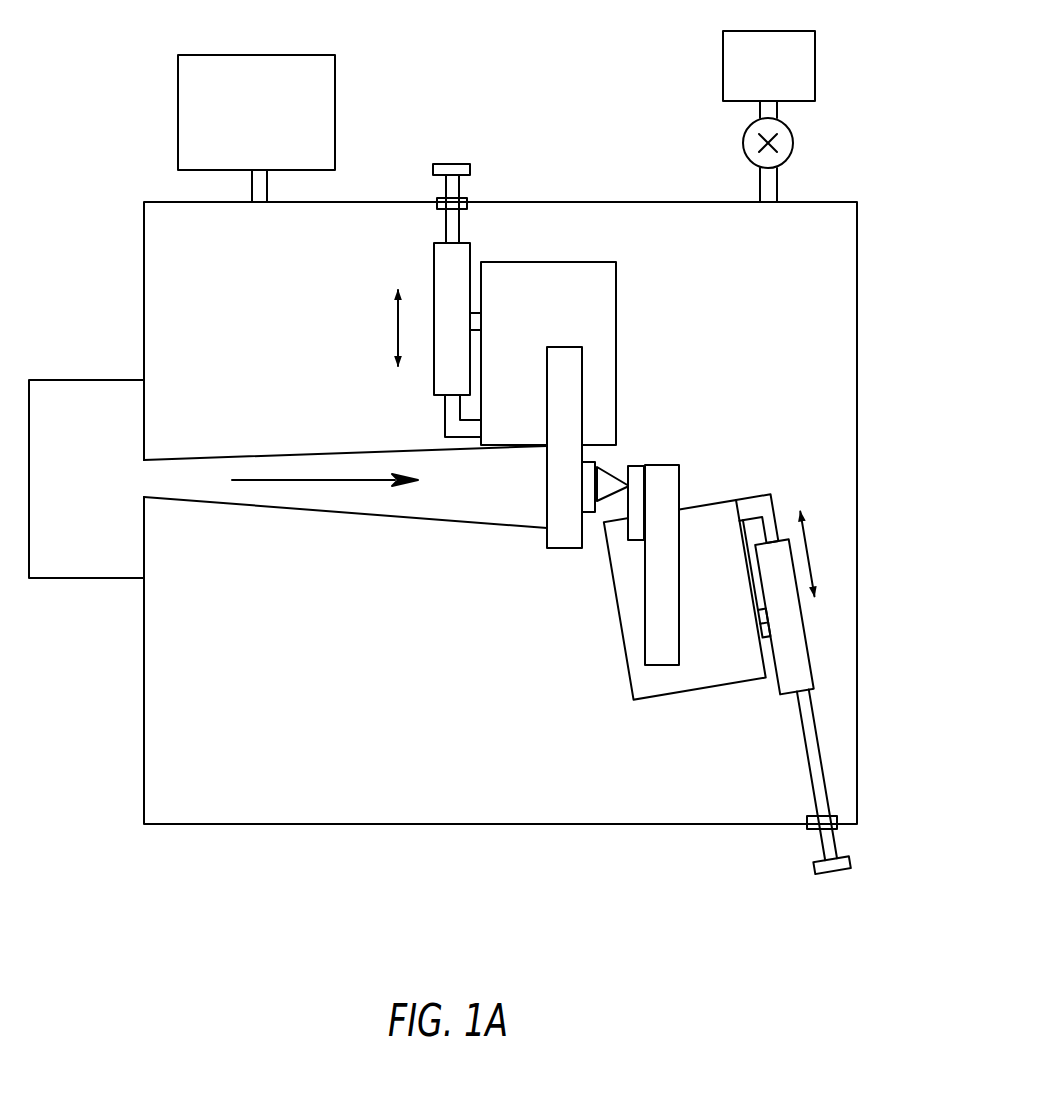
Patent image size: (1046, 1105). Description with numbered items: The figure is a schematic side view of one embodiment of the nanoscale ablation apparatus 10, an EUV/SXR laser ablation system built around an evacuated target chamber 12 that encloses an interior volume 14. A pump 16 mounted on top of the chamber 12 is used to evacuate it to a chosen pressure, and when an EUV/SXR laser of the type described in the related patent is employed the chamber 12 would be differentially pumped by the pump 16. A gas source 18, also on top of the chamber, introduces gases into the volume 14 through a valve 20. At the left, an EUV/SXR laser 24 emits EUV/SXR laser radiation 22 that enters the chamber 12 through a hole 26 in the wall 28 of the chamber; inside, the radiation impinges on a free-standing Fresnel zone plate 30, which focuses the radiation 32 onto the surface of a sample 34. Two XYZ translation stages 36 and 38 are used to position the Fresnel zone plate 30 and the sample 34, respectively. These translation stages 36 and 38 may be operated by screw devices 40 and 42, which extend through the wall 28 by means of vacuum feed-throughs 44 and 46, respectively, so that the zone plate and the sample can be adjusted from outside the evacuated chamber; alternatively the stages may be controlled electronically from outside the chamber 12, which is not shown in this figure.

The nanoscale ablation apparatus 10 is at (202, 838).
The chamber 12 is at (523, 825).
The interior volume 14 is at (306, 676).
The pump 16 is at (241, 123).
The gas source 18 is at (756, 81).
The valve 20 is at (794, 148).
The EUV/SXR laser radiation 22 is at (452, 519).
The EUV/SXR laser 24 is at (81, 491).
The hole 26 is at (145, 483).
The wall 28 is at (145, 783).
The free-standing Fresnel zone plate 30 is at (599, 461).
The focused radiation 32 is at (609, 485).
The sample 34 is at (638, 475).
The XYZ translation stage 36 is at (536, 333).
The XYZ translation stage 38 is at (701, 624).
The screw device 40 is at (476, 165).
The screw device 42 is at (832, 878).
The vacuum feed-through 44 is at (473, 198).
The vacuum feed-through 46 is at (831, 811).